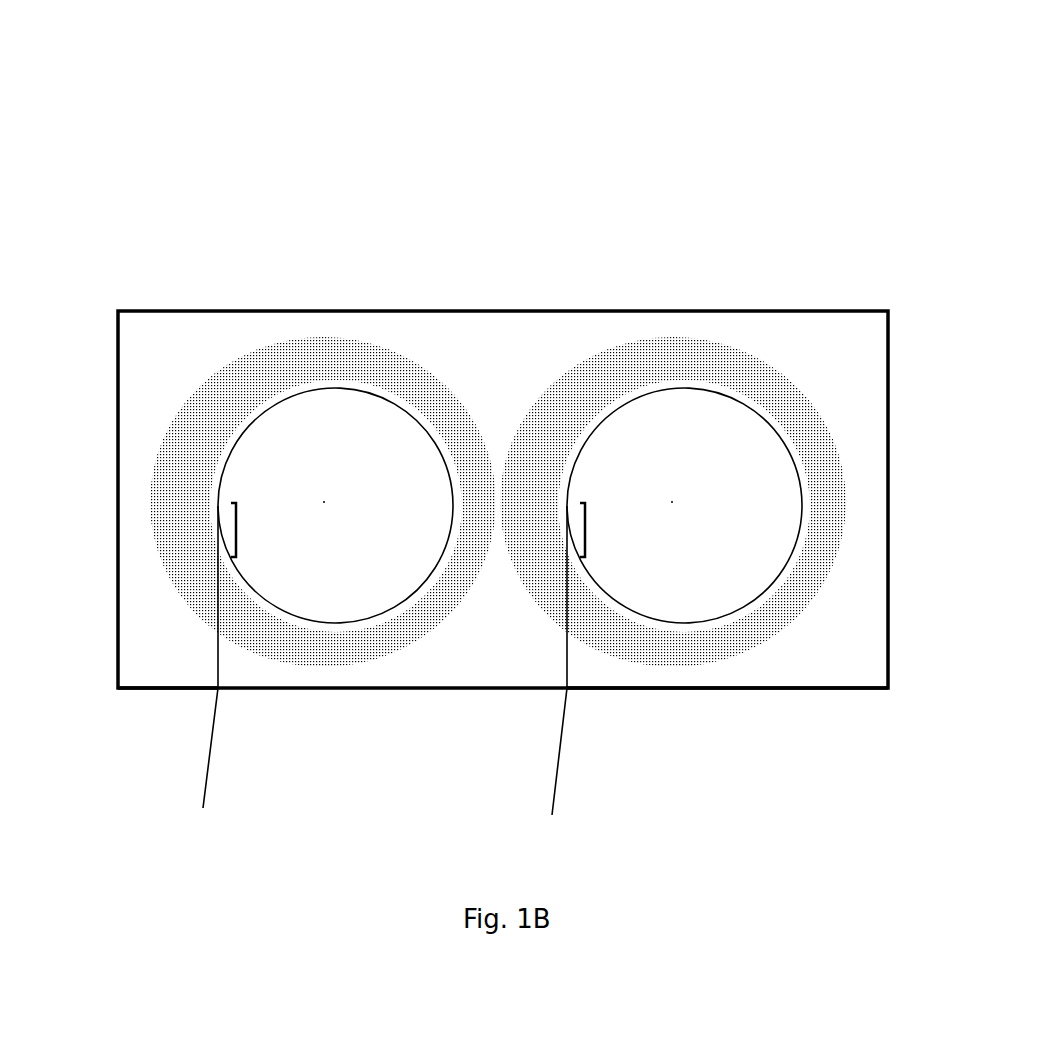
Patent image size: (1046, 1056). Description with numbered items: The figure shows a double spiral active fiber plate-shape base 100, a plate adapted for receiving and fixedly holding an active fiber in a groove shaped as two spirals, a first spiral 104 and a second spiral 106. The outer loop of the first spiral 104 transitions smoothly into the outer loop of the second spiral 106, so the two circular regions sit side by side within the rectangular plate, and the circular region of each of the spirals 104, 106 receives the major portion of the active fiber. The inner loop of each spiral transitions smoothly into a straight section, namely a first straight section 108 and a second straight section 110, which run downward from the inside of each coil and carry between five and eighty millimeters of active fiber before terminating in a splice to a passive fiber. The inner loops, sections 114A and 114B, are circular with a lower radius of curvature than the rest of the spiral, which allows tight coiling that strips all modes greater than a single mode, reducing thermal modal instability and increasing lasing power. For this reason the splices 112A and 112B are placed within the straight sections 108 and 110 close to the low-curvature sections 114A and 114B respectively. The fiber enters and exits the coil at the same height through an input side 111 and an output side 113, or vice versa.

The double spiral active fiber plate-shape base 100 is at (532, 143).
The first spiral 104 is at (197, 423).
The second spiral 106 is at (733, 368).
The first straight section 108 is at (217, 677).
The second straight section 110 is at (567, 670).
The input side 111 is at (207, 676).
The output side 113 is at (548, 676).
The splice 112A is at (237, 528).
The splice 112B is at (587, 530).
The inner loop section 114A is at (257, 418).
The inner loop section 114B is at (613, 417).